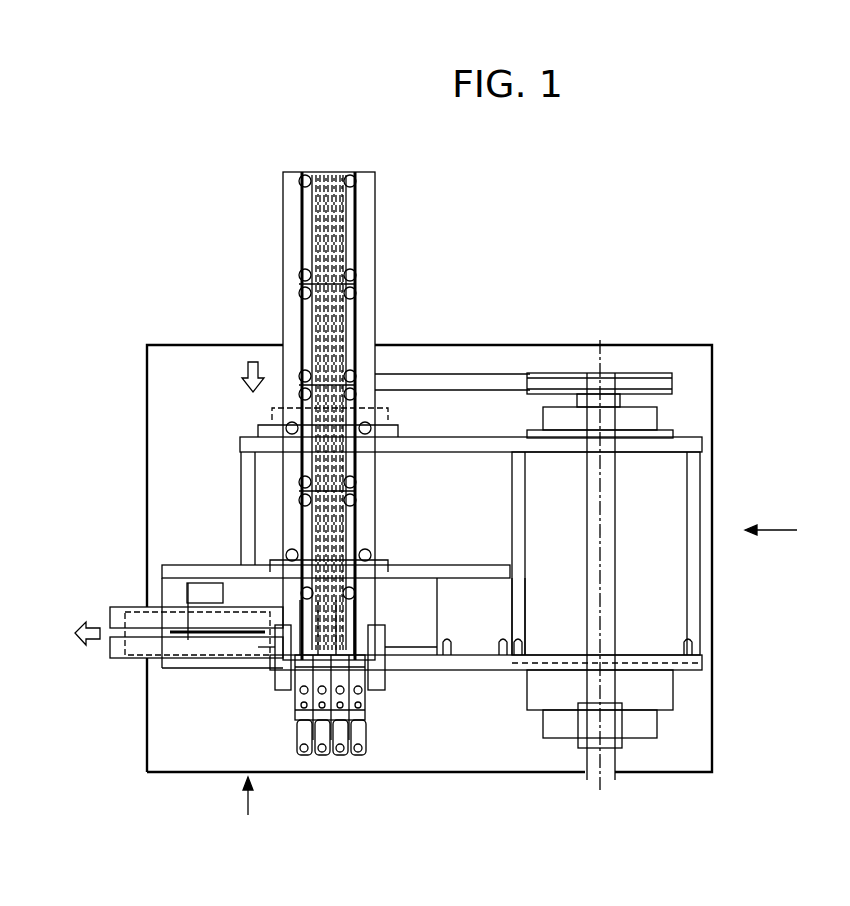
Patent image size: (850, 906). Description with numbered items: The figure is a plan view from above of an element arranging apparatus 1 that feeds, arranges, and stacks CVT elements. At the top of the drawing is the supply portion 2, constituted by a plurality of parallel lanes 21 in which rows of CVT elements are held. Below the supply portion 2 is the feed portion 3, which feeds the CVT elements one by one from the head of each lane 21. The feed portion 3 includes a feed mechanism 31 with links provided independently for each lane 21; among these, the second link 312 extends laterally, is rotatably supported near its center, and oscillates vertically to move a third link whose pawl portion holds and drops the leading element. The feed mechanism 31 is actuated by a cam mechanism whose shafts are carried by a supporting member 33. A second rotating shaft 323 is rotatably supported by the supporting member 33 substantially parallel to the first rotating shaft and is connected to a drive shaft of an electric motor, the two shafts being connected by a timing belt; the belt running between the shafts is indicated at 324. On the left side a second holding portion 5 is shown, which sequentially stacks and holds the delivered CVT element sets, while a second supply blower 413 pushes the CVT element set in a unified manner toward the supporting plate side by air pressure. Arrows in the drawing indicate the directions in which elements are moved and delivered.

The element arranging apparatus 1 is at (134, 273).
The supply portion 2 is at (345, 326).
The lane 21 is at (321, 173).
The feed portion 3 is at (360, 712).
The feed mechanism 31 is at (360, 702).
The second link 312 is at (378, 786).
The second rotating shaft 323 is at (600, 552).
The belt 324 is at (484, 385).
The supporting member 33 is at (440, 446).
The second supply blower 413 is at (182, 640).
The second holding portion 5 is at (136, 662).